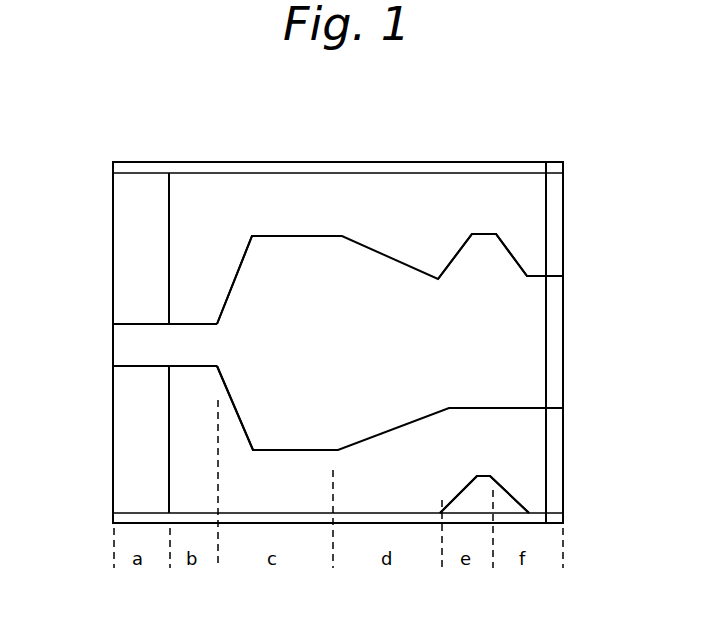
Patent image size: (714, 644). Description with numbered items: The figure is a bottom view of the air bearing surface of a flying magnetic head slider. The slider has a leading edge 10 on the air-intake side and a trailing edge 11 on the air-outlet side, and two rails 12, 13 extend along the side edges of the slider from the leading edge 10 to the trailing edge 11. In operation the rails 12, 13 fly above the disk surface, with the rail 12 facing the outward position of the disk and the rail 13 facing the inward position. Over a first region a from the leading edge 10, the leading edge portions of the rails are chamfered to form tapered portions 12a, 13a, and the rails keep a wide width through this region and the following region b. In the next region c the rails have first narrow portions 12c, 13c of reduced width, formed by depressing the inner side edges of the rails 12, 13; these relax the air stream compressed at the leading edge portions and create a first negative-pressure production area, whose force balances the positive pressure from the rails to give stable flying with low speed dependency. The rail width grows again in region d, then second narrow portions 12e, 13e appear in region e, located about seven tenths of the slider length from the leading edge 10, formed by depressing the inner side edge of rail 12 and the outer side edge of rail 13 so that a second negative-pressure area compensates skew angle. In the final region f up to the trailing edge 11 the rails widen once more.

The leading edge 10 is at (113, 348).
The trailing edge 11 is at (565, 343).
The rail 12 is at (342, 193).
The tapered portion 12a is at (132, 241).
The first narrow portion 12c is at (272, 200).
The second narrow portion 12e is at (494, 203).
The rail 13 is at (357, 523).
The tapered portion 13a is at (138, 462).
The first narrow portion 13c is at (274, 495).
The second narrow portion 13e is at (483, 430).